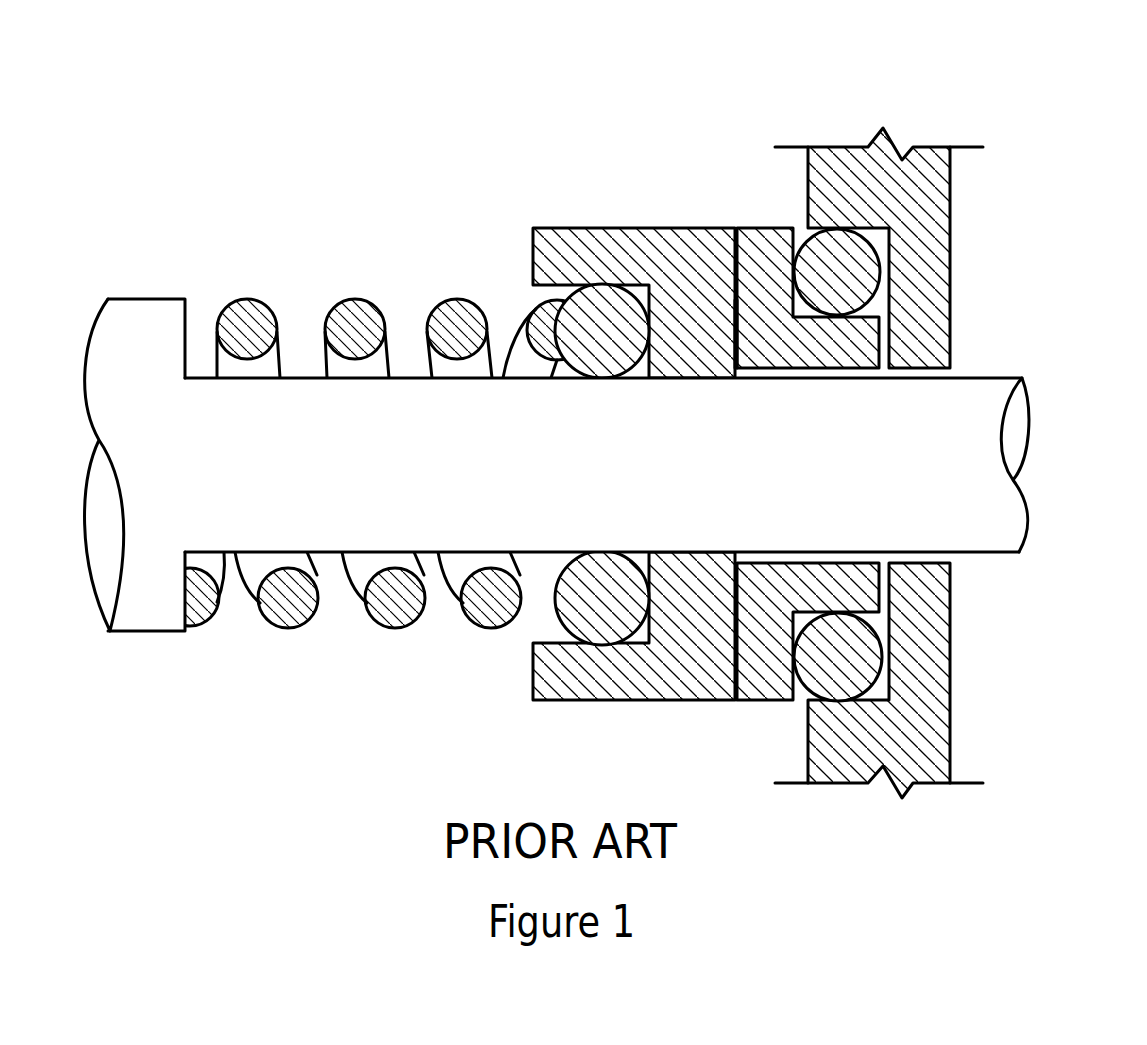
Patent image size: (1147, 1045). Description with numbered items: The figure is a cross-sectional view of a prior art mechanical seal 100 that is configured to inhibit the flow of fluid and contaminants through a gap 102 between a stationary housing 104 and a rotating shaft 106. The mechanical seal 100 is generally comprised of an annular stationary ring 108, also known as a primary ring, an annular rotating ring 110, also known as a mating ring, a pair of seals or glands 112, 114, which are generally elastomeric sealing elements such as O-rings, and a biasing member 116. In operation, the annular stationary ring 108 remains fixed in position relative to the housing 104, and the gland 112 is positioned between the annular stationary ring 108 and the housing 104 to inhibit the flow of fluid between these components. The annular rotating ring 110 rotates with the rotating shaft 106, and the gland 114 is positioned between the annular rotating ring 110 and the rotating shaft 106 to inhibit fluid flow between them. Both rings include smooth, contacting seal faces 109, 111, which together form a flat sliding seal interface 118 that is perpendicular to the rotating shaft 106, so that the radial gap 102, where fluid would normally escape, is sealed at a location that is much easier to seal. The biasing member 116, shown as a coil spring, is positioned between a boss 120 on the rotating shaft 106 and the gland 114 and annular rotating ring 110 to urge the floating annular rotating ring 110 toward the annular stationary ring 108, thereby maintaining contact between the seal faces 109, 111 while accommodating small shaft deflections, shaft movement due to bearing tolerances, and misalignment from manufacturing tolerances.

The mechanical seal 100 is at (466, 130).
The gap 102 is at (923, 367).
The stationary housing 104 is at (927, 170).
The rotating shaft 106 is at (980, 448).
The annular stationary ring 108 is at (760, 683).
The seal face 109 is at (738, 273).
The annular rotating ring 110 is at (610, 690).
The seal face 111 is at (728, 268).
The gland 112 is at (808, 677).
The gland 114 is at (575, 592).
The biasing member 116 is at (383, 610).
The sliding seal interface 118 is at (728, 290).
The boss 120 is at (198, 622).